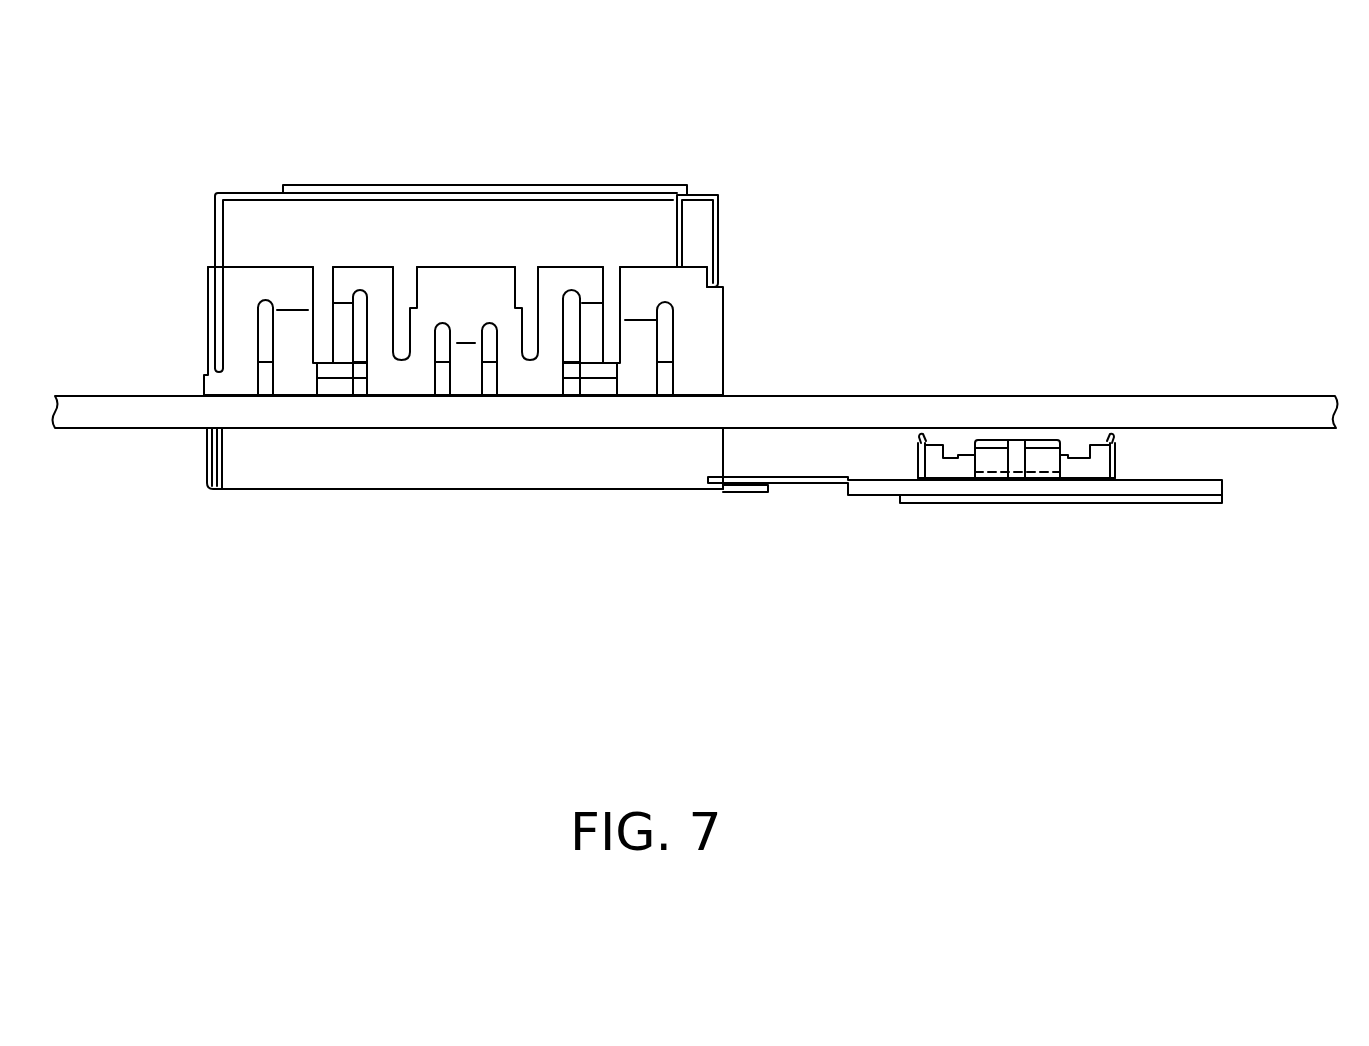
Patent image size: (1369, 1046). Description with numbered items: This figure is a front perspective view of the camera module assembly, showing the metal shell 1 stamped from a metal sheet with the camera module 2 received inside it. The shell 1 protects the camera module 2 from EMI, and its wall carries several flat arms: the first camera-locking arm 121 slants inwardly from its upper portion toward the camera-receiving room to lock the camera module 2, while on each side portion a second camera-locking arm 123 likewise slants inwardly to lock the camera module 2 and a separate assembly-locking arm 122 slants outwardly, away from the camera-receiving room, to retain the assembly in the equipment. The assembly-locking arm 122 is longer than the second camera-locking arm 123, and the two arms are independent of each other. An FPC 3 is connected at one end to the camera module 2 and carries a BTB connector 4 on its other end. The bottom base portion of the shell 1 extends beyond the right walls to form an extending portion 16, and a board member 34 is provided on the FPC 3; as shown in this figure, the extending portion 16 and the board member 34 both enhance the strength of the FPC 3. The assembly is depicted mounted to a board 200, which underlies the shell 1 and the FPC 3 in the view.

The shell 1 is at (655, 450).
The camera module 2 is at (560, 227).
The FPC 3 is at (797, 483).
The BTB connector 4 is at (1040, 457).
The extending portion 16 is at (721, 483).
The board member 34 is at (1140, 503).
The first camera-locking arm 121 is at (470, 343).
The assembly-locking arm 122 is at (283, 335).
The second camera-locking arm 123 is at (342, 335).
The printed circuit board 200 is at (1282, 413).